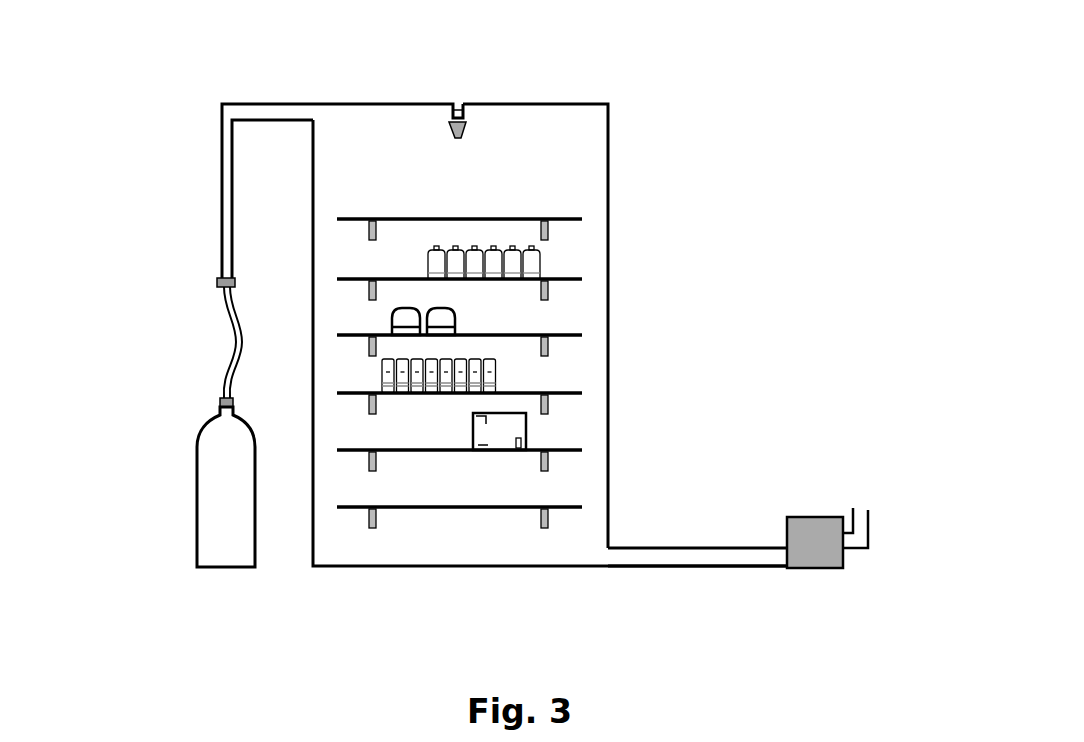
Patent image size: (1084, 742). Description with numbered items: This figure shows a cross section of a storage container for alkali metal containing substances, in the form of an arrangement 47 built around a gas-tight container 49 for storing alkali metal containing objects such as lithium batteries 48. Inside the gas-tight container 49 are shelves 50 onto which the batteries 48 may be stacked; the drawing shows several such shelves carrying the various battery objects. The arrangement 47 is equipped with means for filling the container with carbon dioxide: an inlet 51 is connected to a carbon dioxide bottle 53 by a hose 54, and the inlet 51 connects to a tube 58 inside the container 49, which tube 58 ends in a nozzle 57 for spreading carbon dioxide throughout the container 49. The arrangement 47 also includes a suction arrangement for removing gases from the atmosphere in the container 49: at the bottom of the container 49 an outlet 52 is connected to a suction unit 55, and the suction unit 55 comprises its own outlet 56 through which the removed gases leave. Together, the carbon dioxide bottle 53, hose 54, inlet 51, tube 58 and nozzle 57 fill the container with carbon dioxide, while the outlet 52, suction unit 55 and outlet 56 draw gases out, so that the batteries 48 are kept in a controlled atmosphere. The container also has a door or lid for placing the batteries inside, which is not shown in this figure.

The arrangement 47 is at (214, 669).
The lithium batteries 48 is at (455, 318).
The gas-tight container 49 is at (608, 148).
The shelves 50 is at (337, 219).
The inlet 51 is at (278, 104).
The outlet 52 is at (663, 568).
The carbon dioxide bottle 53 is at (198, 444).
The hose 54 is at (228, 336).
The suction unit 55 is at (815, 569).
The outlet 56 is at (868, 522).
The nozzle 57 is at (461, 139).
The tube 58 is at (467, 118).